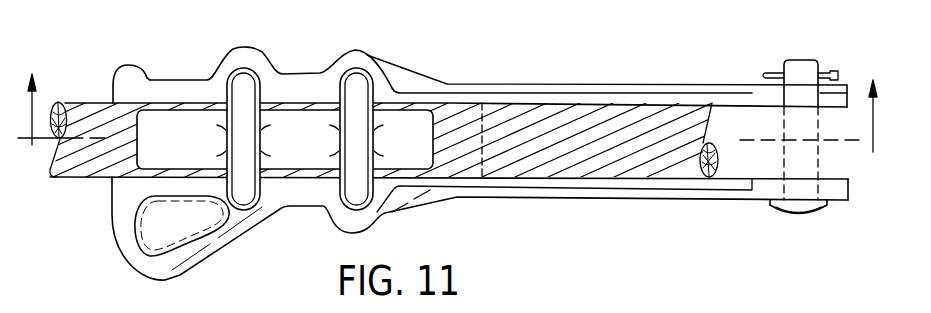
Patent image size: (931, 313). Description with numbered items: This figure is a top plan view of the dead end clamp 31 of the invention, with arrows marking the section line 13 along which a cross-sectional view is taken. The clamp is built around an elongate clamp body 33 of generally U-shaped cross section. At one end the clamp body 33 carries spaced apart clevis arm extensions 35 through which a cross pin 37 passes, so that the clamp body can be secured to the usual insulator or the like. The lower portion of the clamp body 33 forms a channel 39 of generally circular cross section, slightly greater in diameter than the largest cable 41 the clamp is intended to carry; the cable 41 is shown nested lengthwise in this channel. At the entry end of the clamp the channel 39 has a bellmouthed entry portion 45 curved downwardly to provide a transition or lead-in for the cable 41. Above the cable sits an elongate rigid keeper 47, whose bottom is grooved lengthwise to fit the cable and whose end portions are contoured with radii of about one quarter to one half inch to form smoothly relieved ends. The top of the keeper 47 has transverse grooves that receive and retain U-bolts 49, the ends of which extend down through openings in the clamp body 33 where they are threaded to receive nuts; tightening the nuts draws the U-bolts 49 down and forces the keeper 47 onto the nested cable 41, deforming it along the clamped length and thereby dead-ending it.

The section line 13 is at (453, 137).
The dead end clamp 31 is at (421, 66).
The clamp body 33 is at (398, 209).
The clevis arm extensions 35 is at (625, 92).
The cross pin 37 is at (793, 125).
The channel 39 is at (480, 103).
The cable 41 is at (90, 80).
The bellmouthed entry portion 45 is at (112, 72).
The keeper 47 is at (278, 135).
The U-bolts 49 is at (242, 84).